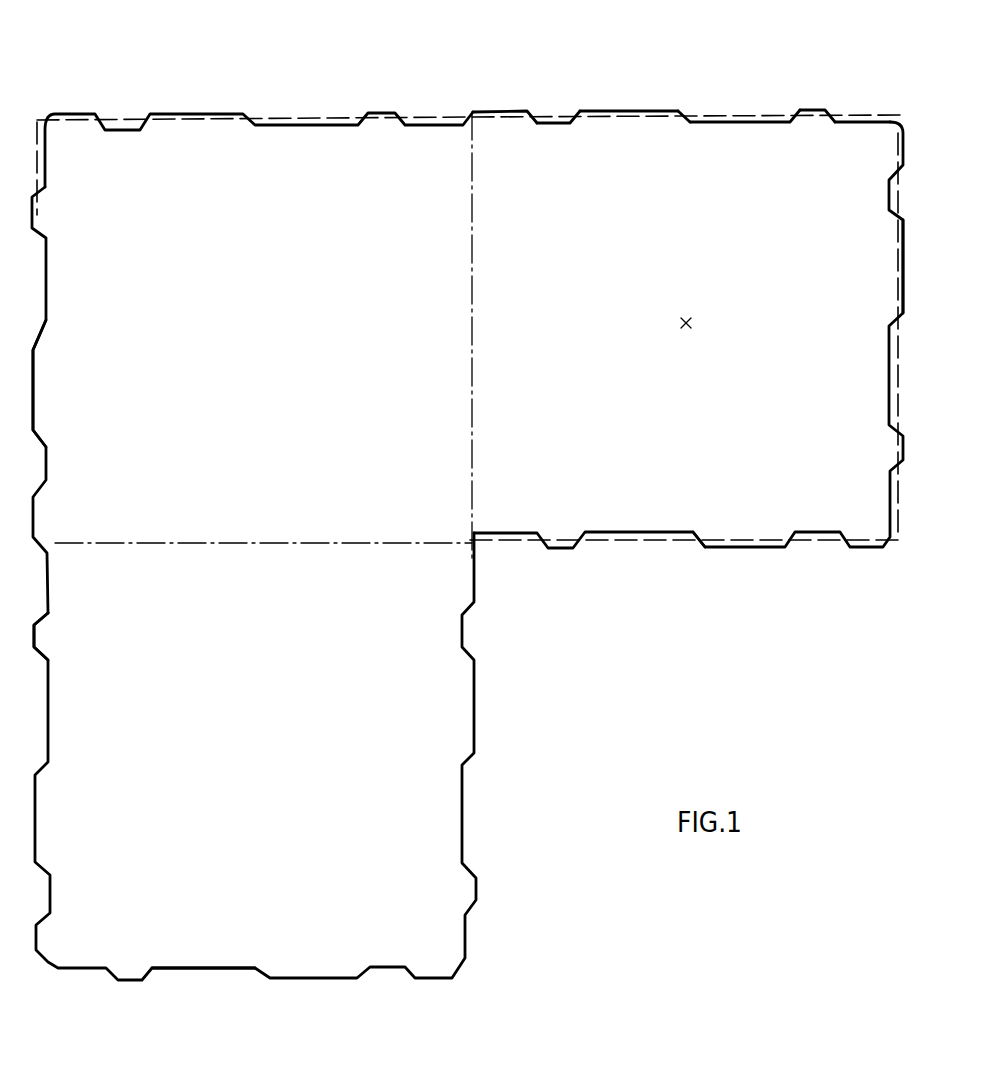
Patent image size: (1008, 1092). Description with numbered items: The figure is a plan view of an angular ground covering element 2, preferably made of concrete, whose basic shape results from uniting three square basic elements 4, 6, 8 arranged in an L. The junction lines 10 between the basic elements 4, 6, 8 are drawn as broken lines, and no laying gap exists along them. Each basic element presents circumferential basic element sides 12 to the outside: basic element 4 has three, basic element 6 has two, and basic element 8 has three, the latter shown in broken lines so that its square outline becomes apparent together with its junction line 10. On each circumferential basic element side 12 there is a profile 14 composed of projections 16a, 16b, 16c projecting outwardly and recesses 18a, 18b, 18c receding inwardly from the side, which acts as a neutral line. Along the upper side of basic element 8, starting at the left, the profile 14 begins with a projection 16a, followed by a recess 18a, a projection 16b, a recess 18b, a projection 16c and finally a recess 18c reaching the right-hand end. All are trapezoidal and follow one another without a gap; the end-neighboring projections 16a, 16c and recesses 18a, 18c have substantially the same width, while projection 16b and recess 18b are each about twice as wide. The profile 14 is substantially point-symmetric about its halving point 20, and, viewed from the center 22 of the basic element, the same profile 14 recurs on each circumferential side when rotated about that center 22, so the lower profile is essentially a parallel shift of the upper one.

The ground covering element 2 is at (486, 76).
The basic element 4 is at (261, 775).
The basic element 6 is at (298, 373).
The basic element 8 is at (642, 261).
The junction line 10 is at (474, 356).
The circumferential basic element side 12 is at (720, 132).
The profile 14 is at (793, 133).
The projection 16a is at (508, 110).
The projection 16b is at (630, 110).
The projection 16c is at (817, 109).
The recess 18a is at (562, 125).
The recess 18b is at (757, 124).
The recess 18c is at (865, 125).
The halving point 20 is at (692, 112).
The center 22 is at (683, 330).